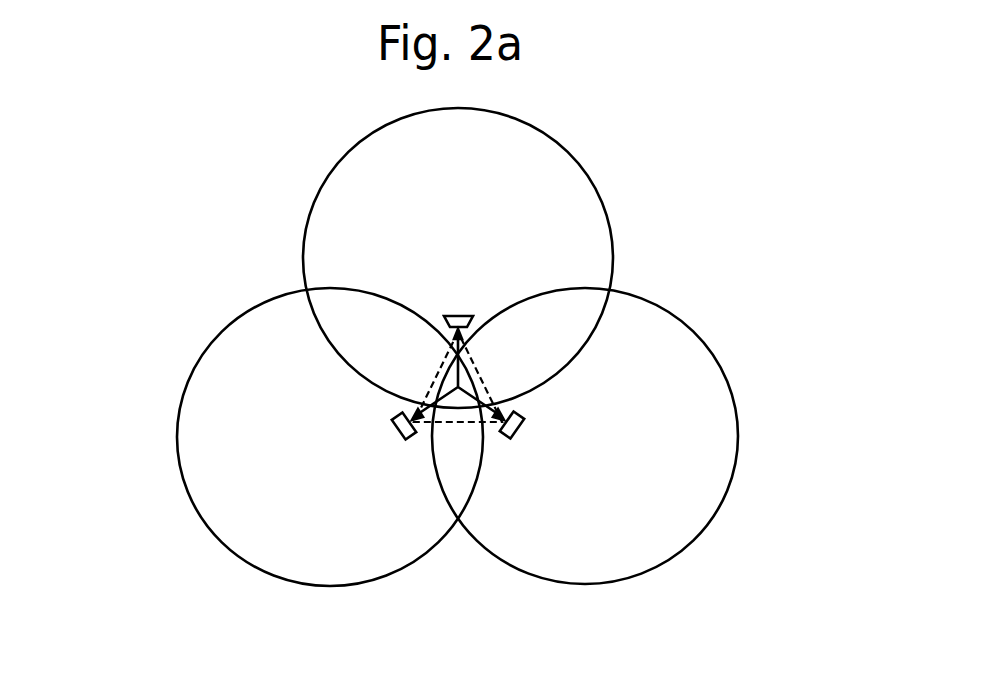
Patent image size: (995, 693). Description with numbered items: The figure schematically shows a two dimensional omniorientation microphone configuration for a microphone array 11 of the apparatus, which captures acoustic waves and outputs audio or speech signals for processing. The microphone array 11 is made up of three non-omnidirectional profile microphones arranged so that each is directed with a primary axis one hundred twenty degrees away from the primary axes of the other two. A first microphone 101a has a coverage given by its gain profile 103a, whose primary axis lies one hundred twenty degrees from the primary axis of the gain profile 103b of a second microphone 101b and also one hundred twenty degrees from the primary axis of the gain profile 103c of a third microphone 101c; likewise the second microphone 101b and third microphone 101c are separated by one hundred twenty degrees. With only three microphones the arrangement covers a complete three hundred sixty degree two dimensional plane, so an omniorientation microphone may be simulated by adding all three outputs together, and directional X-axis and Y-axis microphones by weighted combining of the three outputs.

The microphone array 11 is at (192, 325).
The first microphone 101a is at (455, 316).
The second microphone 101b is at (519, 432).
The third microphone 101c is at (396, 430).
The gain profile 103a is at (593, 190).
The gain profile 103b is at (687, 543).
The gain profile 103c is at (223, 542).